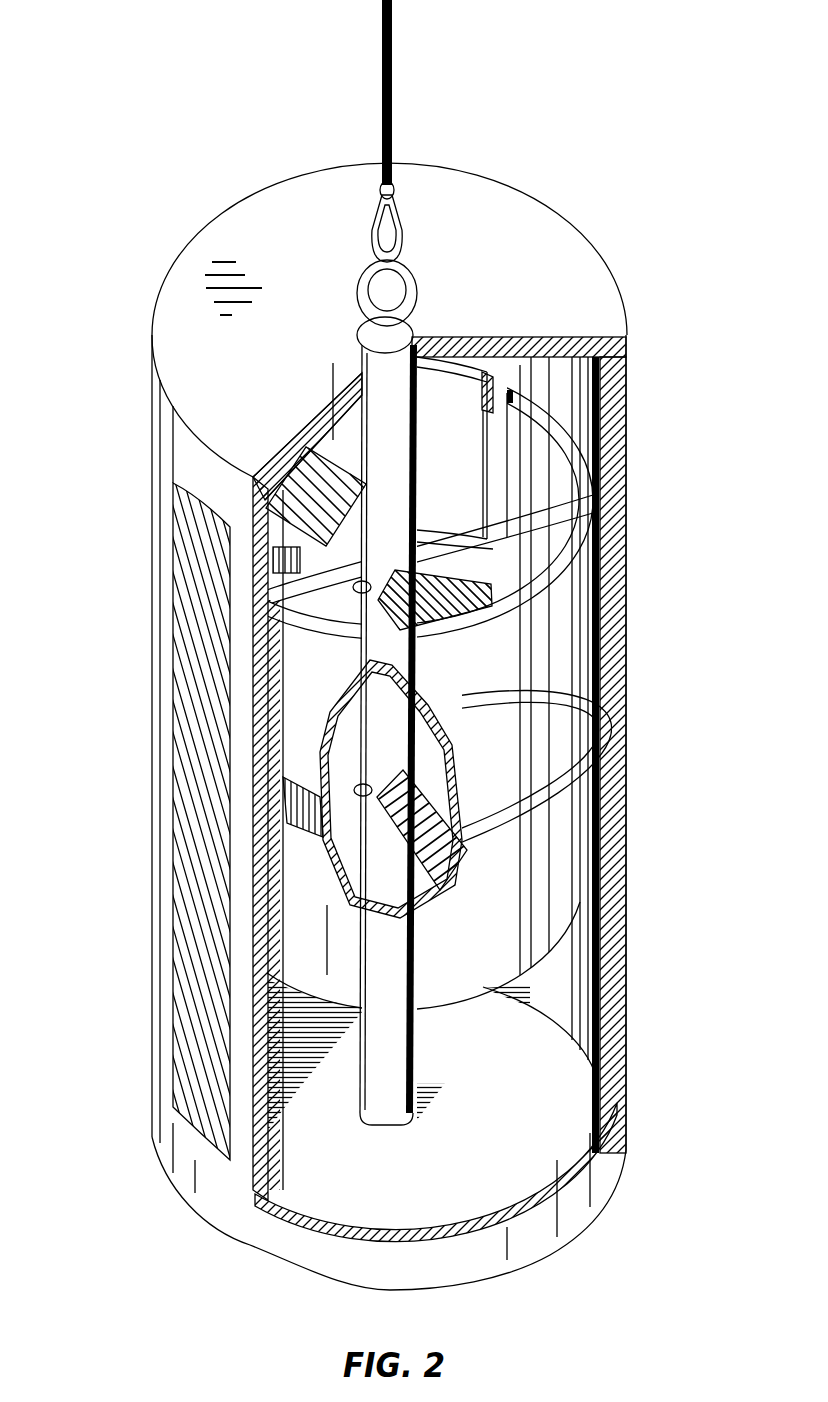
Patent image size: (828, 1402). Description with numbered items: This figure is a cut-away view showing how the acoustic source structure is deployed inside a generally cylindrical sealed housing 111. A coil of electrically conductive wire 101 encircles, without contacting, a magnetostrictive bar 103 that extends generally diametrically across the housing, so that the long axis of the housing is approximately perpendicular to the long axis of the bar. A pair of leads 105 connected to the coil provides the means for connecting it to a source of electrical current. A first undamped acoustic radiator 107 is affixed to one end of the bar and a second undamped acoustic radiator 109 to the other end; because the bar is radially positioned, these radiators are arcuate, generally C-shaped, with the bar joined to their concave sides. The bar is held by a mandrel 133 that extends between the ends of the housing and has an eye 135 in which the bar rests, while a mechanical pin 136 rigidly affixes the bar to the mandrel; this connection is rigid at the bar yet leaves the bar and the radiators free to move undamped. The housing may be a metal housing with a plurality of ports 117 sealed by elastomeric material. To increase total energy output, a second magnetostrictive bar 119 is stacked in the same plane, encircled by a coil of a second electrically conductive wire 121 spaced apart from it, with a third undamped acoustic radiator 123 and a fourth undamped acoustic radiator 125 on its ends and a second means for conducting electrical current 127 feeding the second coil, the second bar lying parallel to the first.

The coil of electrically conductive wire 101 is at (598, 547).
The magnetostrictive bar 103 is at (303, 483).
The pair of leads 105 is at (305, 435).
The first undamped acoustic radiator 107 is at (607, 632).
The second undamped acoustic radiator 109 is at (530, 408).
The generally cylindrical sealed housing 111 is at (152, 465).
The ports 117 is at (178, 528).
The second magnetostrictive bar 119 is at (520, 782).
The coil of second electrically conductive wire 121 is at (577, 813).
The third undamped acoustic radiator 123 is at (607, 885).
The fourth undamped acoustic radiator 125 is at (455, 752).
The second means for conducting electrical current 127 is at (430, 703).
The mandrel 133 is at (577, 337).
The eye 135 is at (587, 508).
The mechanical pin 136 is at (287, 793).